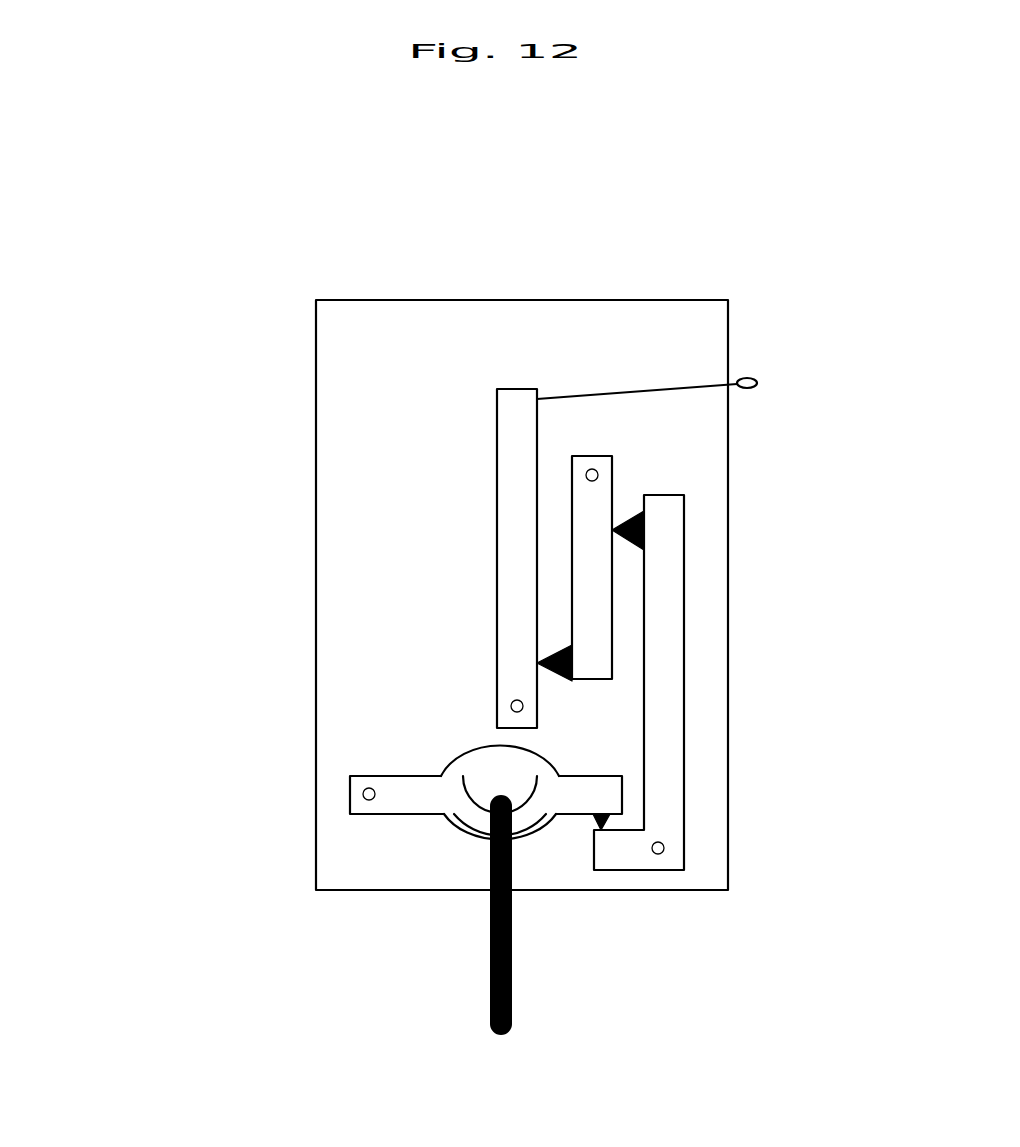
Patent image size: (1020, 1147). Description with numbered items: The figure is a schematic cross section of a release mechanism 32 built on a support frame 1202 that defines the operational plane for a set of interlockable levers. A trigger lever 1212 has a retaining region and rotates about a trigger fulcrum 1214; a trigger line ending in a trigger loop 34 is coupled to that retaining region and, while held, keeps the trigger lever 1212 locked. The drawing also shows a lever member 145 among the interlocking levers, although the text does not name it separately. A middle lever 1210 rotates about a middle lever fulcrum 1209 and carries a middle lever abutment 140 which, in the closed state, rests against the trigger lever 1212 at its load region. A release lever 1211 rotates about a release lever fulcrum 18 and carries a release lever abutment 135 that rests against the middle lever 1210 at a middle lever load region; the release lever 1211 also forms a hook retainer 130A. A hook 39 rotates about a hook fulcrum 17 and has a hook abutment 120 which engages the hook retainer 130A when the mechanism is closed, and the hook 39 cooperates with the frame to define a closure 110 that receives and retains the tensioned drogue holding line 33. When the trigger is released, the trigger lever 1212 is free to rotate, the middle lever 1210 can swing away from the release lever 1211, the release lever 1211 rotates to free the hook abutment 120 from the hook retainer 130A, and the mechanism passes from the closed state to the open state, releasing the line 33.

The release mechanism 32 is at (447, 554).
The support frame 1202 is at (705, 320).
The first lever arm 145 is at (411, 489).
The trigger lever 1212 is at (515, 615).
The trigger fulcrum 1214 is at (511, 705).
The trigger loop 34 is at (772, 382).
The middle lever fulcrum 1209 is at (598, 475).
The release lever abutment 135 is at (645, 527).
The middle lever abutment 140 is at (540, 662).
The middle lever 1210 is at (716, 751).
The release lever 1211 is at (716, 751).
The hook retainer 130A is at (608, 838).
The release lever fulcrum 18 is at (664, 845).
The hook 39 is at (423, 867).
The hook fulcrum 17 is at (363, 796).
The closure 110 is at (497, 776).
The drogue holding line 33 is at (512, 988).
The hook abutment 120 is at (601, 835).